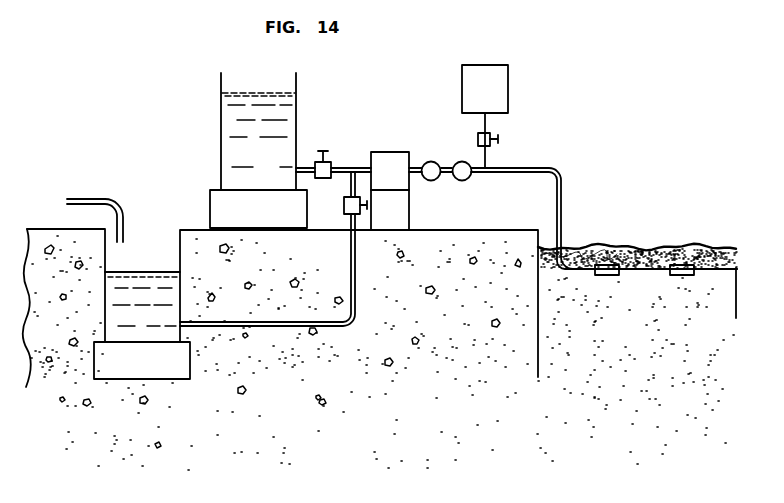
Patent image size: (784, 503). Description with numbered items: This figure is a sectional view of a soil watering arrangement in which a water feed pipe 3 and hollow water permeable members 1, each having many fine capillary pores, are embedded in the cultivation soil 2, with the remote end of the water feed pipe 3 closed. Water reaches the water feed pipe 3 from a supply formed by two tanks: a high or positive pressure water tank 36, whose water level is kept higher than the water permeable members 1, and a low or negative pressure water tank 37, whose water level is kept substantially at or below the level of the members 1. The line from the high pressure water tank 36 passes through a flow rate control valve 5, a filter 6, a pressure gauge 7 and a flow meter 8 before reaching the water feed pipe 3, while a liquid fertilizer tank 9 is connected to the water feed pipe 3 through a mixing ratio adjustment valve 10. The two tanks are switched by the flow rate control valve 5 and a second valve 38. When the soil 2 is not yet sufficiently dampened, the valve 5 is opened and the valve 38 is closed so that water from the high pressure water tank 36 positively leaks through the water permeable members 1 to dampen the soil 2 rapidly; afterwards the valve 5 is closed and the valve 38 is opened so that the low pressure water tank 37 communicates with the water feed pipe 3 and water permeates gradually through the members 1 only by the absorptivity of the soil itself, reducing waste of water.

The hollow water permeable member 1 is at (605, 265).
The cultivation soil 2 is at (630, 248).
The water feed pipe 3 is at (531, 170).
The flow rate control valve 5 is at (327, 150).
The filter 6 is at (394, 160).
The pressure gauge 7 is at (431, 161).
The flow meter 8 is at (461, 161).
The liquid fertilizer tank 9 is at (505, 74).
The mixing ratio adjustment valve 10 is at (491, 134).
The high pressure water tank 36 is at (297, 81).
The low pressure water tank 37 is at (179, 241).
The valve 38 is at (344, 203).